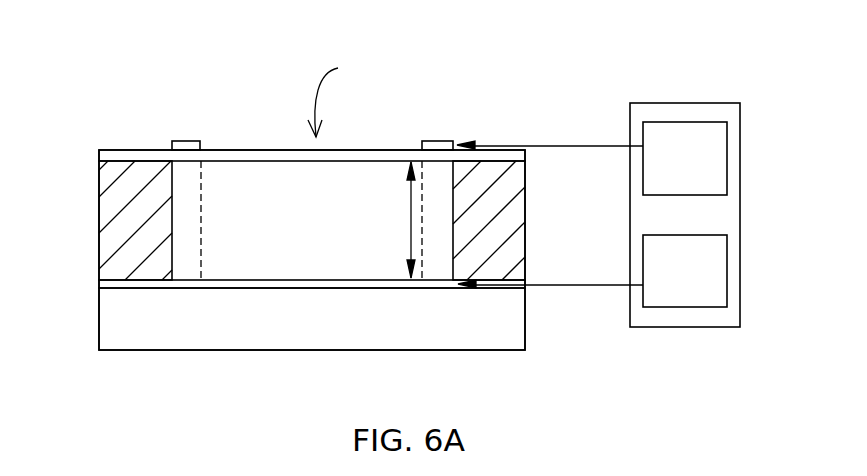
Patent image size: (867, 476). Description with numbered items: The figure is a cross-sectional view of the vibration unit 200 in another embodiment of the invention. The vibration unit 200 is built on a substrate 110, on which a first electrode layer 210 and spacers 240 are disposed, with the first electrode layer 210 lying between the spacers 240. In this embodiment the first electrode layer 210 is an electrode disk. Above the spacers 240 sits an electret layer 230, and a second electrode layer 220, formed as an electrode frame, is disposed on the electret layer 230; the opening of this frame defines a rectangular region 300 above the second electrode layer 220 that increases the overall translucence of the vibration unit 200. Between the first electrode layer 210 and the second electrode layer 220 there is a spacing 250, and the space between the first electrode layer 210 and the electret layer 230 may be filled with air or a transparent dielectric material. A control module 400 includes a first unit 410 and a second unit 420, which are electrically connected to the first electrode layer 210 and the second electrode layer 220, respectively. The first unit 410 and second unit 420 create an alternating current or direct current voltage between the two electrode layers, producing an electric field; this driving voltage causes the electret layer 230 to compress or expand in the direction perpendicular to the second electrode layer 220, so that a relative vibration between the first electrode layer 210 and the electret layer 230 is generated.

The substrate 110 is at (248, 333).
The vibration unit 200 is at (152, 38).
The first electrode layer 210 is at (192, 284).
The second electrode layer 220 is at (183, 145).
The electret layer 230 is at (117, 156).
The spacers 240 is at (107, 233).
The spacing 250 is at (391, 220).
The rectangular region 300 is at (340, 95).
The control module 400 is at (598, 182).
The first unit 410 is at (700, 286).
The second unit 420 is at (700, 174).